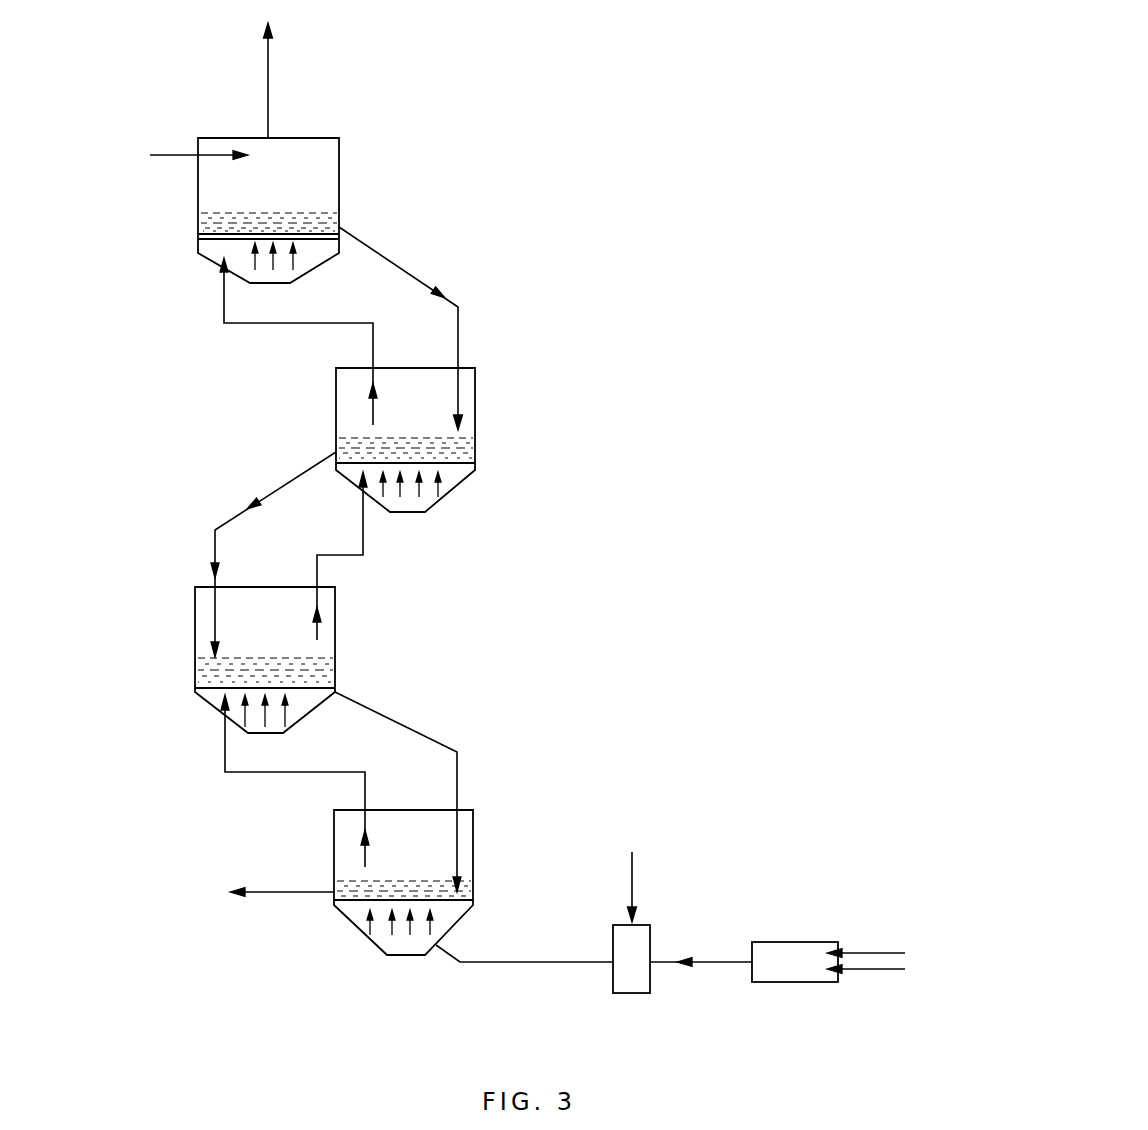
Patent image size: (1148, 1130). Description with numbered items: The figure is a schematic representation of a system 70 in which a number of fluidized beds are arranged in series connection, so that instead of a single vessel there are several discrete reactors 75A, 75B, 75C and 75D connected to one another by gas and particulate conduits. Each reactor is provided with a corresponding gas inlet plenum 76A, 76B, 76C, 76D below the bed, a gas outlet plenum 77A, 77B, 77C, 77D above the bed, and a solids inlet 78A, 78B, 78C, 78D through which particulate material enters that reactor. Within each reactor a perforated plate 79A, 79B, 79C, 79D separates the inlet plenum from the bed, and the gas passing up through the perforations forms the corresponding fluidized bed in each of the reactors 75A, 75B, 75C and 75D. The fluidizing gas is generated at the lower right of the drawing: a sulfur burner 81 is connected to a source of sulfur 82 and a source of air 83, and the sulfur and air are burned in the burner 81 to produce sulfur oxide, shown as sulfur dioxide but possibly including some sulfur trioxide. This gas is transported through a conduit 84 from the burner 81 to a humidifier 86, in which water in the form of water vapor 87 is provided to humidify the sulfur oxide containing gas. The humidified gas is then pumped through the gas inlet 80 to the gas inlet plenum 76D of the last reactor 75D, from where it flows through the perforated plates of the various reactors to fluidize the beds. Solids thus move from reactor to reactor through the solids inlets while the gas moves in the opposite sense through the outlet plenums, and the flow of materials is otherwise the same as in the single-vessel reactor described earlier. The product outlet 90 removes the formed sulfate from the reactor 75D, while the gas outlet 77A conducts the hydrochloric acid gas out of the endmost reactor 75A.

The system 70 is at (702, 432).
The reactor 75A is at (347, 160).
The reactor 75B is at (490, 395).
The reactor 75C is at (345, 612).
The reactor 75D is at (484, 820).
The gas inlet plenum 76A is at (210, 262).
The gas inlet plenum 76B is at (463, 472).
The gas inlet plenum 76C is at (215, 700).
The gas inlet plenum 76D is at (353, 913).
The gas outlet plenum 77A is at (268, 98).
The gas outlet plenum 77B is at (293, 325).
The gas outlet plenum 77C is at (363, 538).
The gas outlet plenum 77D is at (273, 772).
The solids inlet 78A is at (173, 155).
The solids inlet 78B is at (407, 268).
The solids inlet 78C is at (230, 517).
The solids inlet 78D is at (400, 722).
The perforated plate 79A is at (320, 230).
The perforated plate 79B is at (443, 462).
The perforated plate 79C is at (293, 688).
The perforated plate 79D is at (410, 900).
The gas inlet 80 is at (450, 953).
The sulfur burner 81 is at (787, 982).
The source of sulfur 82 is at (883, 948).
The source of air 83 is at (873, 972).
The conduit 84 is at (725, 965).
The humidifier 86 is at (637, 993).
The water vapor 87 is at (632, 877).
The product outlet 90 is at (300, 892).